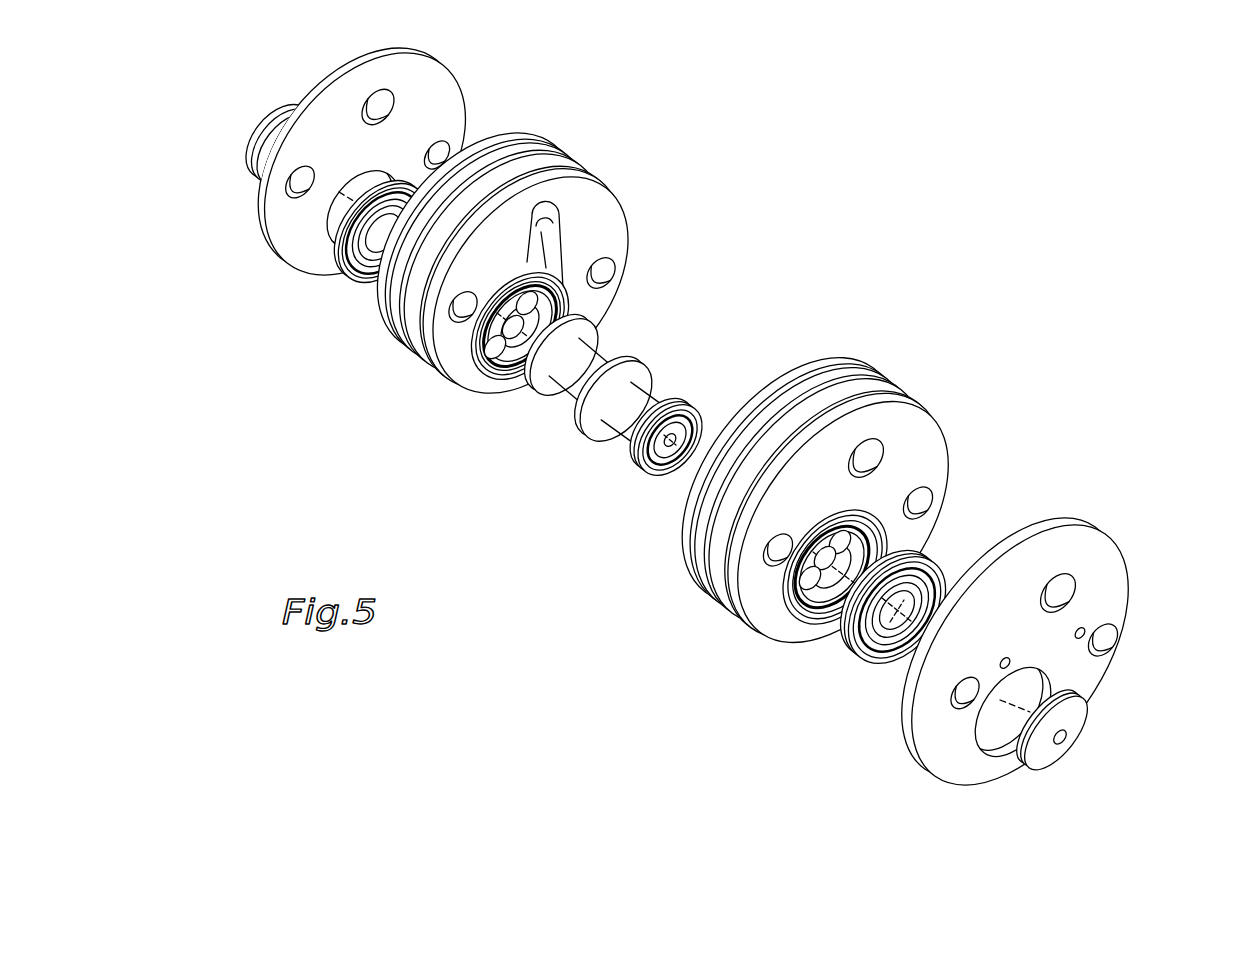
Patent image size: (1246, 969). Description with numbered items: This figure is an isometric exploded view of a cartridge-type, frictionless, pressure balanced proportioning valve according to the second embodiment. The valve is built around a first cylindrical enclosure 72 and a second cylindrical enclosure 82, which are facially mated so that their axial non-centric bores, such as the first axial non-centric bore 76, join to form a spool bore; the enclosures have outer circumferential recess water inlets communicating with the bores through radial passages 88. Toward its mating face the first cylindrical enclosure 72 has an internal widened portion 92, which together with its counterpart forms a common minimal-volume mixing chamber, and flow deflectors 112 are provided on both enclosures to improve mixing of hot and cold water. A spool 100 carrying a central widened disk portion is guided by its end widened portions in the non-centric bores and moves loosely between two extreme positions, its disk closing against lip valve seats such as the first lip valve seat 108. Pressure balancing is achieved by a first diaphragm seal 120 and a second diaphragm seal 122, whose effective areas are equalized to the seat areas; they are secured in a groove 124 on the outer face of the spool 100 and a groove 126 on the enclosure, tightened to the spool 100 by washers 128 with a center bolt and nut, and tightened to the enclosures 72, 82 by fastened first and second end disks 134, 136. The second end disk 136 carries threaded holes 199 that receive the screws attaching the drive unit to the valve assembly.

The first cylindrical enclosure 72 is at (631, 205).
The first axial non-centric bore 76 is at (519, 360).
The second cylindrical enclosure 82 is at (949, 418).
The radial passages 88 is at (510, 355).
The internal widened portion 92 is at (556, 306).
The spool 100 is at (648, 360).
The first lip valve seat 108 is at (498, 352).
The flow deflectors 112 is at (533, 276).
The first diaphragm seal 120 is at (357, 285).
The second diaphragm seal 122 is at (848, 660).
The groove 124 is at (667, 480).
The groove 126 is at (795, 640).
The washers 128 is at (257, 110).
The first end disk 134 is at (456, 80).
The second end disk 136 is at (1130, 553).
The threaded holes 199 is at (1075, 641).